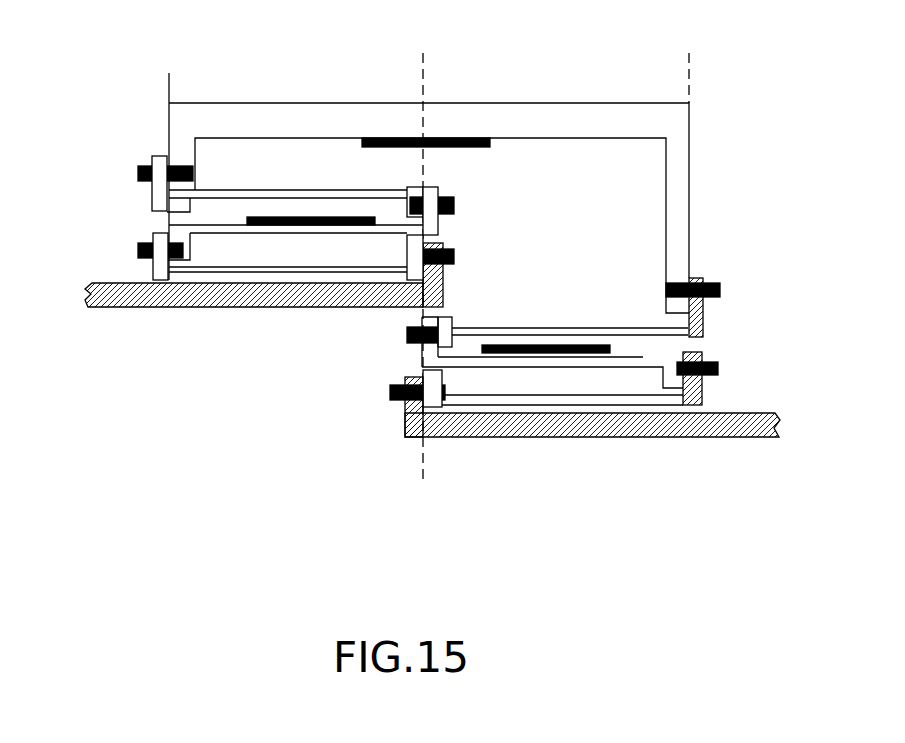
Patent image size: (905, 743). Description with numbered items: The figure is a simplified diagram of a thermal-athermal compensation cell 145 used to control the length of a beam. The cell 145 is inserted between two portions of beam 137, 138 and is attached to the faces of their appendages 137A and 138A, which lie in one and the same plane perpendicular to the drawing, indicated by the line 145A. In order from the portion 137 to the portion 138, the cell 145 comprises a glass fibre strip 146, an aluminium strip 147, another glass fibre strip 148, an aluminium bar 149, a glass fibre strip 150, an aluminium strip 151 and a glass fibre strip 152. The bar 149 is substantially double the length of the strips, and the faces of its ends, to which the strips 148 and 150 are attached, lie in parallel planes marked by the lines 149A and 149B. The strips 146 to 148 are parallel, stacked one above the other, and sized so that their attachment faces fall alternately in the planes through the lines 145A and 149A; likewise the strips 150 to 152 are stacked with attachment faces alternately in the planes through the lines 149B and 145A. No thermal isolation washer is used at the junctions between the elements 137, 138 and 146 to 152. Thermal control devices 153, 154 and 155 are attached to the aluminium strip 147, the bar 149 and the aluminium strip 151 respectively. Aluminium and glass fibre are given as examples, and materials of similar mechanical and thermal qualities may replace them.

The beam portion 137 is at (115, 310).
The appendage 137A is at (444, 285).
The beam portion 138 is at (723, 423).
The appendage 138A is at (405, 409).
The compensation cell 145 is at (210, 470).
The line 145A is at (424, 78).
The glass fibre strip 146 is at (278, 273).
The aluminium strip 147 is at (183, 227).
The glass fibre strip 148 is at (395, 193).
The aluminium bar 149 is at (575, 110).
The line 149A is at (168, 82).
The line 149B is at (690, 77).
The glass fibre strip 150 is at (607, 332).
The aluminium strip 151 is at (645, 356).
The glass fibre strip 152 is at (595, 400).
The thermal control device 153 is at (290, 217).
The thermal control device 154 is at (363, 148).
The thermal control device 155 is at (542, 345).